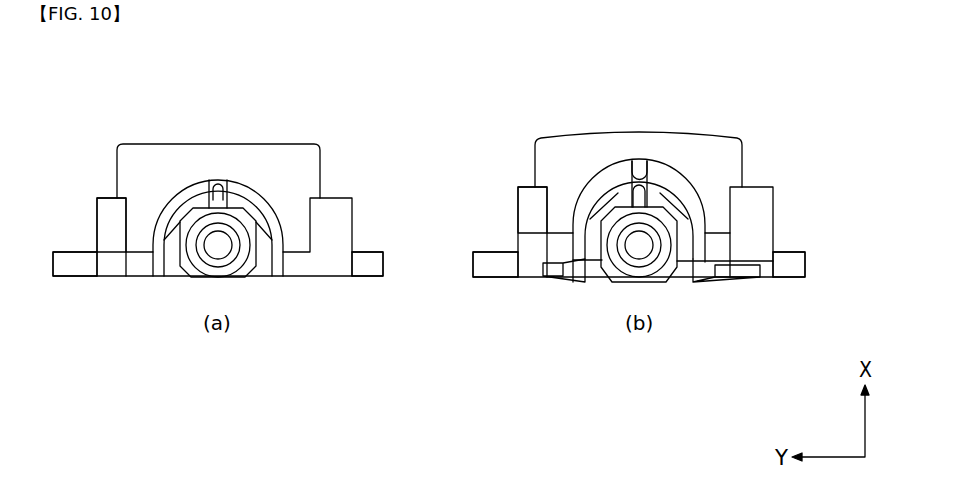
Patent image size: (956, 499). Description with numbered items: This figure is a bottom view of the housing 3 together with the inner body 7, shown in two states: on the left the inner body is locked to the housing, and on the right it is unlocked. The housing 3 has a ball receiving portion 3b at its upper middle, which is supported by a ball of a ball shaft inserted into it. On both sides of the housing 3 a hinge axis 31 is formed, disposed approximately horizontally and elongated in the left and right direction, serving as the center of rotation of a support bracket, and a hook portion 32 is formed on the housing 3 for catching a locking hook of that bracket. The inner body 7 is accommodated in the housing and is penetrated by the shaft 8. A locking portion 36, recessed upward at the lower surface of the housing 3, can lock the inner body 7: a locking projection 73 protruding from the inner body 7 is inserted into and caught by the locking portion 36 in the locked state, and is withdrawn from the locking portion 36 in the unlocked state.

The housing 3 is at (330, 267).
The ball receiving portion 3b is at (283, 153).
The hinge axis 31 is at (57, 270).
The hook portion 32 is at (108, 197).
The locking portion 36 is at (222, 180).
The inner body 7 is at (190, 270).
The locking projection 73 is at (215, 180).
The shaft 8 is at (218, 248).